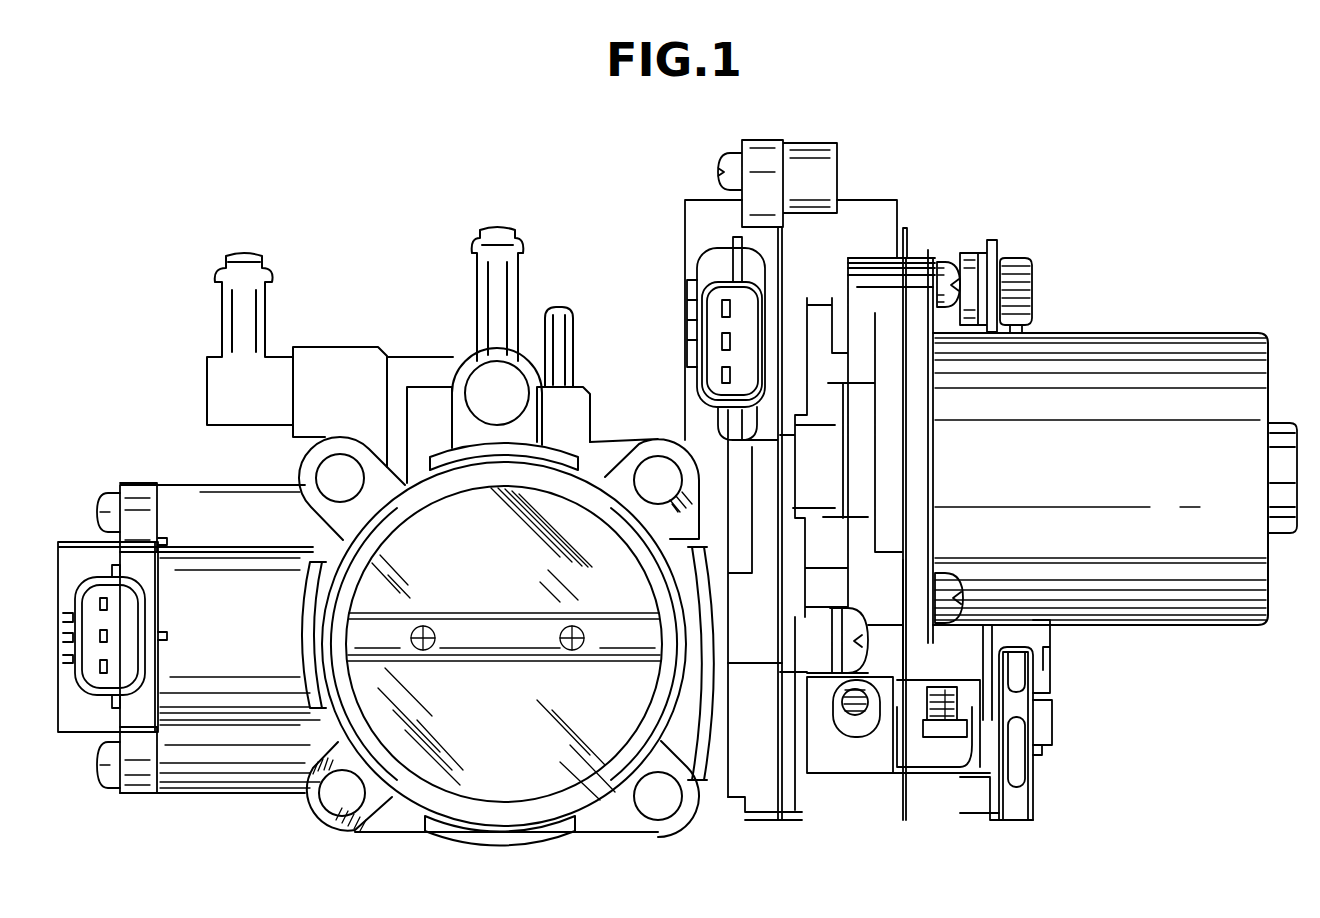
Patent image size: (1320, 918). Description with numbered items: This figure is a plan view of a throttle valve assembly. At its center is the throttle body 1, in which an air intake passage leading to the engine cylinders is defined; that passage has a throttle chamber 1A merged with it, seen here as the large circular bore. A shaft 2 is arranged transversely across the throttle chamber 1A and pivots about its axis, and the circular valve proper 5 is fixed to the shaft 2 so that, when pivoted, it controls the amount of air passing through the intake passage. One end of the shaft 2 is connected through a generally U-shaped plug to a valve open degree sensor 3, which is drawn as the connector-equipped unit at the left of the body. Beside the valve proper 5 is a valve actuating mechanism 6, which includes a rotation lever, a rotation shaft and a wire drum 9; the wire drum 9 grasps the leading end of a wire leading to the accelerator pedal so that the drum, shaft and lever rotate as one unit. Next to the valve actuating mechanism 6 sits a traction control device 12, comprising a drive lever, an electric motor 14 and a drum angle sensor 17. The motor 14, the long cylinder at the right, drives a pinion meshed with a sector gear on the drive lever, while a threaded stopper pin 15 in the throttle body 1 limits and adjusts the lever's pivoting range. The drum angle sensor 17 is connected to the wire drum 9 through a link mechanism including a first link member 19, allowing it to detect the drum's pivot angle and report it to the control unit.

The throttle body 1 is at (697, 817).
The throttle chamber 1A is at (450, 776).
The shaft 2 is at (520, 640).
The valve open degree sensor 3 is at (80, 713).
The circular valve proper 5 is at (447, 527).
The valve actuating mechanism 6 is at (1042, 768).
The wire drum 9 is at (1035, 807).
The traction control device 12 is at (1073, 330).
The electric motor 14 is at (1198, 355).
The threaded stopper pin 15 is at (858, 712).
The drum angle sensor 17 is at (700, 215).
The first link member 19 is at (965, 250).